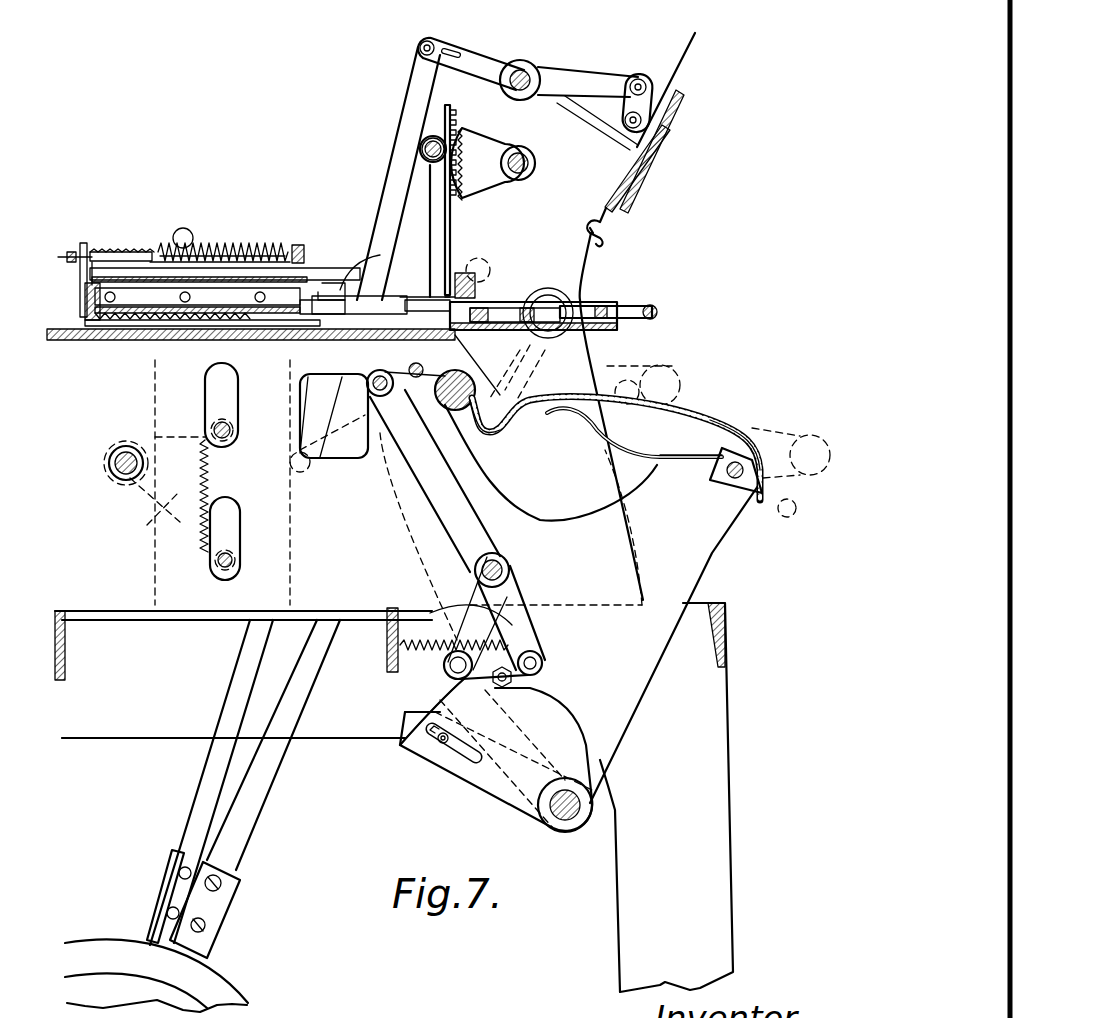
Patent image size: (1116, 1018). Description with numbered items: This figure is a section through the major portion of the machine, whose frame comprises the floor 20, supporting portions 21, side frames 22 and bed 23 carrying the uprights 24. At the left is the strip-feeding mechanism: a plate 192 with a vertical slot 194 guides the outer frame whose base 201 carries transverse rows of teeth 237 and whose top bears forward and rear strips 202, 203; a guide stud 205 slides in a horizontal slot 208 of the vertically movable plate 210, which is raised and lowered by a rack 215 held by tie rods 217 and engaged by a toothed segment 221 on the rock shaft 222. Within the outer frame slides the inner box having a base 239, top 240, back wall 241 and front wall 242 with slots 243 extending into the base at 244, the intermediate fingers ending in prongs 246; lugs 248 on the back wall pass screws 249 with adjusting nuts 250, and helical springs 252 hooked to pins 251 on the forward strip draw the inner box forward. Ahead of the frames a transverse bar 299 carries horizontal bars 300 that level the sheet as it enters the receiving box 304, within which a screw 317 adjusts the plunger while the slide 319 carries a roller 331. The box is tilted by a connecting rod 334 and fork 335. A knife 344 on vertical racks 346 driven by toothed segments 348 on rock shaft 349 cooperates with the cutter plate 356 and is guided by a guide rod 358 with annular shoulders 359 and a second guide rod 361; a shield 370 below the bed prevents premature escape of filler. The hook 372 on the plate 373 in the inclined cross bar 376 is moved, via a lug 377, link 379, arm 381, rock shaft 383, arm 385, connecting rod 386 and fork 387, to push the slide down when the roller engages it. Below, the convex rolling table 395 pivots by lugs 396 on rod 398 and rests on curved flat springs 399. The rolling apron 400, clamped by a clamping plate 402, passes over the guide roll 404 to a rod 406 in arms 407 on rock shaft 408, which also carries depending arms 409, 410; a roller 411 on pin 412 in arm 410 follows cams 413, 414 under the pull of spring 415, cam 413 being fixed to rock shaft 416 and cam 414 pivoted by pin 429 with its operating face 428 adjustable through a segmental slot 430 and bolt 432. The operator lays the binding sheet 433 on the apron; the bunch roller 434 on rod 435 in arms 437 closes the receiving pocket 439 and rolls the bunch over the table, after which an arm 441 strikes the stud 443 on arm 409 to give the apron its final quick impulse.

The floor 20 is at (137, 612).
The supporting portions 21 is at (722, 900).
The side frames 22 is at (690, 573).
The bed 23 is at (90, 341).
The uprights 24 is at (568, 268).
The plate 192 is at (190, 232).
The vertical slot 194 is at (183, 228).
The base 201 is at (225, 306).
The forward strip 202 is at (330, 268).
The rear strip 203 is at (98, 268).
The guide stud 205 is at (150, 268).
The horizontal slot 208 is at (335, 283).
The plate 210 is at (218, 397).
The rack 215 is at (230, 488).
The tie rods 217 is at (214, 428).
The toothed segment 221 is at (148, 524).
The rock shaft 222 is at (125, 470).
The teeth 237 is at (160, 320).
The base 239 is at (140, 327).
The top 240 is at (274, 260).
The back wall 241 is at (86, 298).
The front wall 242 is at (398, 173).
The slots 243 is at (350, 316).
The slot extensions 244 is at (318, 316).
The prongs 246 is at (414, 279).
The lugs 248 is at (83, 243).
The screws 249 is at (140, 252).
The adjusting nuts 250 is at (68, 240).
The pins 251 is at (298, 245).
The helical springs 252 is at (215, 245).
The flat transverse bar 299 is at (417, 281).
The horizontal bars 300 is at (376, 369).
The receiving box 304 is at (505, 300).
The screw 317 is at (590, 306).
The slide 319 is at (632, 305).
The roller 331 is at (660, 308).
The connecting rod 334 is at (248, 822).
The fork 335 is at (205, 947).
The knife 344 is at (452, 230).
The vertical racks 346 is at (481, 194).
The toothed segments 348 is at (498, 152).
The rock shaft 349 is at (530, 163).
The cutter plate 356 is at (415, 354).
The guide rod 358 is at (433, 140).
The annular shoulders 359 is at (425, 145).
The second guide rod 361 is at (460, 273).
The shield 370 is at (445, 352).
The hook 372 is at (605, 228).
The plate 373 is at (682, 106).
The inclined cross bar 376 is at (668, 138).
The lug 377 is at (653, 95).
The link 379 is at (691, 79).
The arm 381 is at (585, 72).
The rock shaft 383 is at (524, 76).
The arm 385 is at (462, 52).
The connecting rod 386 is at (204, 787).
The fork 387 is at (160, 893).
The convex rolling table 395 is at (712, 428).
The lugs 396 is at (724, 474).
The rod 398 is at (730, 480).
The curved flat springs 399 is at (625, 455).
The rolling apron 400 is at (712, 420).
The clamping plate 402 is at (755, 495).
The guide roll 404 is at (455, 412).
The rod 406 is at (362, 458).
The arms 407 is at (458, 505).
The rock shaft 408 is at (503, 570).
The depending arm 409 is at (470, 612).
The depending arm 410 is at (525, 625).
The roller 411 is at (540, 672).
The pin 412 is at (543, 660).
The cam 413 is at (582, 738).
The cam 414 is at (430, 720).
The spring 415 is at (520, 598).
The rock shaft 416 is at (585, 815).
The operating face 428 is at (445, 697).
The pin 429 is at (512, 682).
The segmental slot 430 is at (468, 760).
The bolt 432 is at (440, 745).
The binding sheet of tobacco 433 is at (580, 378).
The bunch roller 434 is at (536, 370).
The rod 435 is at (495, 430).
The arms 437 is at (430, 540).
The receiving pocket 439 is at (520, 440).
The arm 441 is at (405, 740).
The stud 443 is at (386, 666).